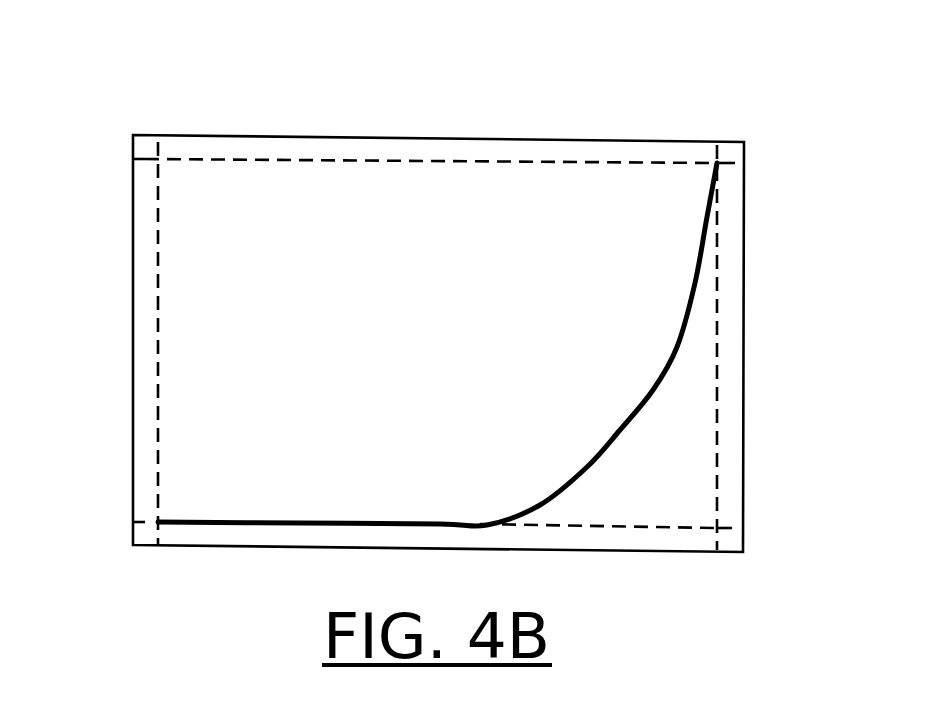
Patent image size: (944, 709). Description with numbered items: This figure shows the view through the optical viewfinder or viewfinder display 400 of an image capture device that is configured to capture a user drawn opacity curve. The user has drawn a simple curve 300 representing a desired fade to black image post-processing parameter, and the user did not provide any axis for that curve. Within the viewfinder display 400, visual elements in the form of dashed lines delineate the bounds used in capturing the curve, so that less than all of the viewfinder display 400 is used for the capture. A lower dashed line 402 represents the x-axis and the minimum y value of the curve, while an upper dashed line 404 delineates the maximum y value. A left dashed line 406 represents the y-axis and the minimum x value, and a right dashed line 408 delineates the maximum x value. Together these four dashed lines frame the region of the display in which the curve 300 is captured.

The optical viewfinder or viewfinder display 400 is at (439, 137).
The lower dashed line 402 is at (497, 527).
The upper dashed line 404 is at (344, 160).
The left dashed line 406 is at (158, 318).
The right dashed line 408 is at (718, 397).
The curve 300 is at (666, 362).